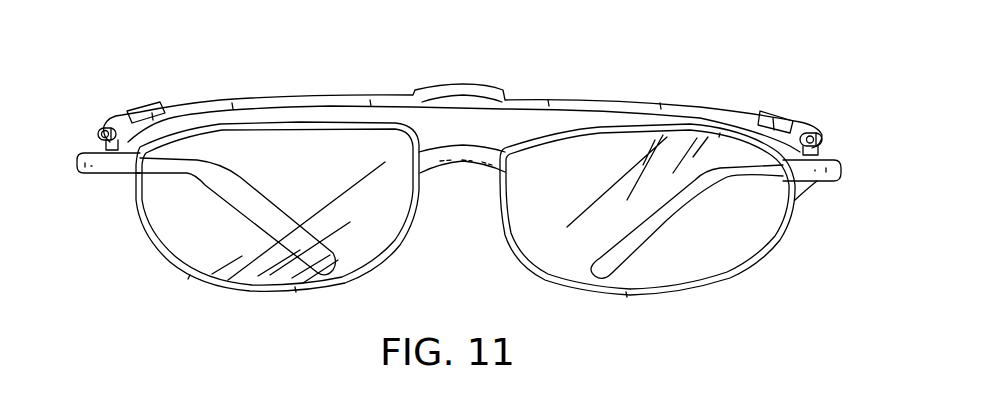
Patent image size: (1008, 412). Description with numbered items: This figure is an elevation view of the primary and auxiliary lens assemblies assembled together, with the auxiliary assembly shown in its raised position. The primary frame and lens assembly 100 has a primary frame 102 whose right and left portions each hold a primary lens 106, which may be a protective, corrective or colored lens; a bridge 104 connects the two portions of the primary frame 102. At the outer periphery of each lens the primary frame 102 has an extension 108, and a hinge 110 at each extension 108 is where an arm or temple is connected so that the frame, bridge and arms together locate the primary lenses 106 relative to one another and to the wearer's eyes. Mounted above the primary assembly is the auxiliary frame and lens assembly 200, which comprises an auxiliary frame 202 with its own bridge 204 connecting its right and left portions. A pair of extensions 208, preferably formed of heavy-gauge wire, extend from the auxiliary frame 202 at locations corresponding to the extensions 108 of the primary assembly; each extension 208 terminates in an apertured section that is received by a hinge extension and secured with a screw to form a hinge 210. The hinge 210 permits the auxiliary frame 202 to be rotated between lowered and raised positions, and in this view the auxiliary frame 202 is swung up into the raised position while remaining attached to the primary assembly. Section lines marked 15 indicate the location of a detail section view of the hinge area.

The section line 15- 15 is at (143, 315).
The primary frame and lens assembly 100 is at (673, 314).
The primary frame 102 is at (283, 293).
The bridge 104 is at (457, 167).
The primary lens 106 is at (318, 189).
The extension 108 is at (817, 182).
The hinge 110 is at (88, 172).
The auxiliary frame and lens assembly 200 is at (634, 40).
The auxiliary frame 202 is at (295, 92).
The bridge 204 is at (467, 86).
The extension 208 is at (104, 117).
The hinge 210 is at (98, 135).